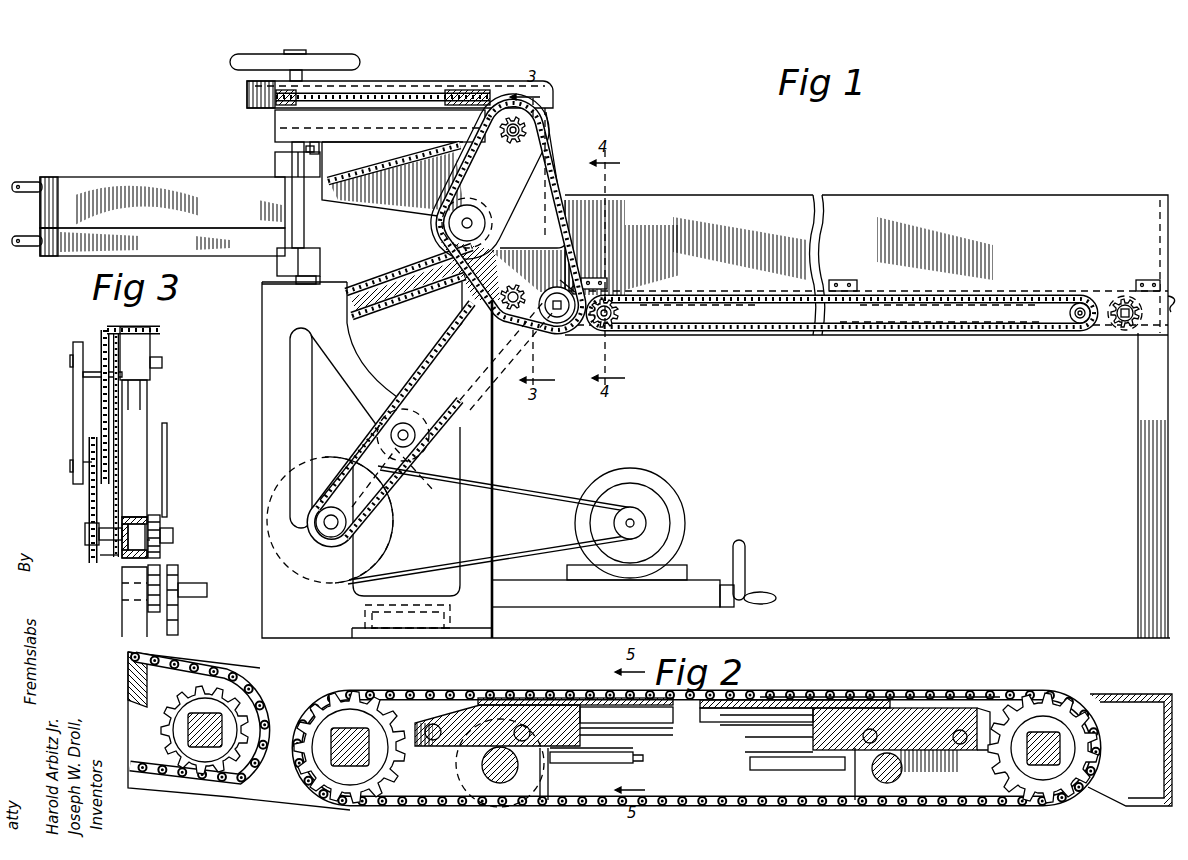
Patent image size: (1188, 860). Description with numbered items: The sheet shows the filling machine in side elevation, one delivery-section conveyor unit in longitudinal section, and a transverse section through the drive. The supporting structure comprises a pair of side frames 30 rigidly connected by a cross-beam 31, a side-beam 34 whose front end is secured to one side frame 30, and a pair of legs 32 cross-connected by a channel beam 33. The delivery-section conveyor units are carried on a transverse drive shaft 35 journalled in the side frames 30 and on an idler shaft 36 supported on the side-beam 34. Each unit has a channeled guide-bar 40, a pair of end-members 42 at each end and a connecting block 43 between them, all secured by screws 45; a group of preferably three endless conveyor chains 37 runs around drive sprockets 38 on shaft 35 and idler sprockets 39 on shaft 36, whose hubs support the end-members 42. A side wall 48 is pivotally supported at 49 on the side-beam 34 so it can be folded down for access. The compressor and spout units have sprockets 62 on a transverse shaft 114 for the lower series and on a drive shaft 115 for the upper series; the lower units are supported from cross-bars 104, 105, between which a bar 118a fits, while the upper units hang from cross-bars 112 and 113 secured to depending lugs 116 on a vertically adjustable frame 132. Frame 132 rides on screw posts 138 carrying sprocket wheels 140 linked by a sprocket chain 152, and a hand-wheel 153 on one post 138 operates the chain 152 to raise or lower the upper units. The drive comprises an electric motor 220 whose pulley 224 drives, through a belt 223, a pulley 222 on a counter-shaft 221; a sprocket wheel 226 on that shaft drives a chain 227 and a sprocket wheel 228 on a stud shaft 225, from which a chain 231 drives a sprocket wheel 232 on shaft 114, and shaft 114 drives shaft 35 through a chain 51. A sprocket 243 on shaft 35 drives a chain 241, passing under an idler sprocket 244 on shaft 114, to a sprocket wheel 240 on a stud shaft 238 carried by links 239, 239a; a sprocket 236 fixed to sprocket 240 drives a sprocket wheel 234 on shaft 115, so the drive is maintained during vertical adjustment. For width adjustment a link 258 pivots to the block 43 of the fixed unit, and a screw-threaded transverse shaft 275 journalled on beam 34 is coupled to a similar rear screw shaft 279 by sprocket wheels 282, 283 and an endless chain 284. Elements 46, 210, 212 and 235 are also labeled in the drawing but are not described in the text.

In FIG. 1, the side frames 30 is at (262, 317).
In FIG. 3, the side frames 30 is at (122, 590).
In FIG. 1, the cross-beam 31 is at (362, 614).
In FIG. 1, the legs 32 is at (1138, 466).
In FIG. 2, the channel beam 33 is at (1165, 716).
In FIG. 1, the side-beam 34 is at (650, 330).
In FIG. 2, the side-beam 34 is at (1102, 703).
In FIG. 1, the transverse drive shaft 35 is at (583, 288).
In FIG. 2, the transverse drive shaft 35 is at (372, 705).
In FIG. 1, the idler shaft 36 is at (1122, 327).
In FIG. 2, the idler shaft 36 is at (1058, 735).
In FIG. 1, the endless conveyor chains 37 is at (965, 298).
In FIG. 2, the endless conveyor chains 37 is at (915, 698).
In FIG. 2, the drive sprockets 38 is at (362, 690).
In FIG. 2, the idler sprockets 39 is at (1047, 712).
In FIG. 2, the channeled guide-bar 40 is at (715, 725).
In FIG. 2, the end-members 42 is at (995, 668).
In FIG. 2, the connecting block 43 is at (557, 708).
In FIG. 2, the screws 45 is at (447, 708).
In FIG. 2, the bolt 46 is at (868, 714).
In FIG. 1, the side wall 48 is at (1030, 200).
In FIG. 1, the pivot 49 is at (845, 282).
In FIG. 2, the chain 51 is at (247, 664).
In FIG. 2, the sprockets 62 is at (262, 672).
In FIG. 1, the cross-bar 104 is at (315, 287).
In FIG. 1, the cross-bar 105 is at (280, 270).
In FIG. 1, the cross-bar 112 is at (300, 170).
In FIG. 1, the cross-bar 113 is at (280, 160).
In FIG. 1, the transverse shaft 114 is at (500, 310).
In FIG. 3, the transverse shaft 114 is at (165, 525).
In FIG. 2, the transverse shaft 114 is at (200, 742).
In FIG. 1, the transverse drive shaft 115 is at (530, 127).
In FIG. 3, the transverse drive shaft 115 is at (162, 364).
In FIG. 1, the depending lugs 116 is at (332, 198).
In FIG. 1, the bar 118a is at (292, 291).
In FIG. 1, the frame 132 is at (380, 126).
In FIG. 1, the front screw posts 138 is at (300, 192).
In FIG. 1, the sprocket wheel 140 is at (488, 90).
In FIG. 3, the sprocket wheel 140 is at (150, 326).
In FIG. 1, the sprocket chain 152 is at (405, 92).
In FIG. 1, the hand-wheel 153 is at (352, 60).
In FIG. 1, the arm 210 is at (148, 193).
In FIG. 1, the arm 212 is at (228, 252).
In FIG. 1, the electric motor 220 is at (685, 522).
In FIG. 1, the counter-shaft 221 is at (330, 530).
In FIG. 1, the pulley 222 is at (380, 549).
In FIG. 1, the belt 223 is at (548, 500).
In FIG. 1, the pulley 224 is at (645, 510).
In FIG. 1, the stud shaft 225 is at (410, 446).
In FIG. 3, the stud shaft 225 is at (196, 587).
In FIG. 1, the sprocket wheel 226 is at (360, 488).
In FIG. 1, the chain 227 is at (358, 450).
In FIG. 1, the sprocket wheel 228 is at (403, 478).
In FIG. 1, the chain 231 is at (437, 340).
In FIG. 3, the chain 231 is at (160, 545).
In FIG. 3, the sprocket wheel 232 is at (166, 505).
In FIG. 3, the sprocket wheel 234 is at (105, 335).
In FIG. 1, the casing plate 235 is at (550, 182).
In FIG. 3, the casing plate 235 is at (100, 395).
In FIG. 3, the sprocket 236 is at (80, 478).
In FIG. 1, the stud shaft 238 is at (460, 228).
In FIG. 1, the link 239 is at (505, 250).
In FIG. 1, the link 239a is at (540, 150).
In FIG. 3, the link 239a is at (90, 450).
In FIG. 1, the sprocket wheel 240 is at (470, 250).
In FIG. 3, the sprocket wheel 240 is at (92, 470).
In FIG. 1, the chain 241 is at (470, 283).
In FIG. 3, the chain 241 is at (92, 560).
In FIG. 1, the sprocket 243 is at (557, 323).
In FIG. 1, the idler sprocket 244 is at (492, 340).
In FIG. 3, the idler sprocket 244 is at (90, 545).
In FIG. 2, the link 258 is at (665, 765).
In FIG. 1, the transverse shaft 275 is at (605, 326).
In FIG. 2, the transverse shaft 275 is at (503, 770).
In FIG. 1, the screw shaft 279 is at (1072, 325).
In FIG. 2, the screw shaft 279 is at (880, 768).
In FIG. 1, the sprocket wheel 282 is at (620, 300).
In FIG. 1, the sprocket wheel 283 is at (1060, 298).
In FIG. 1, the endless chain 284 is at (925, 332).